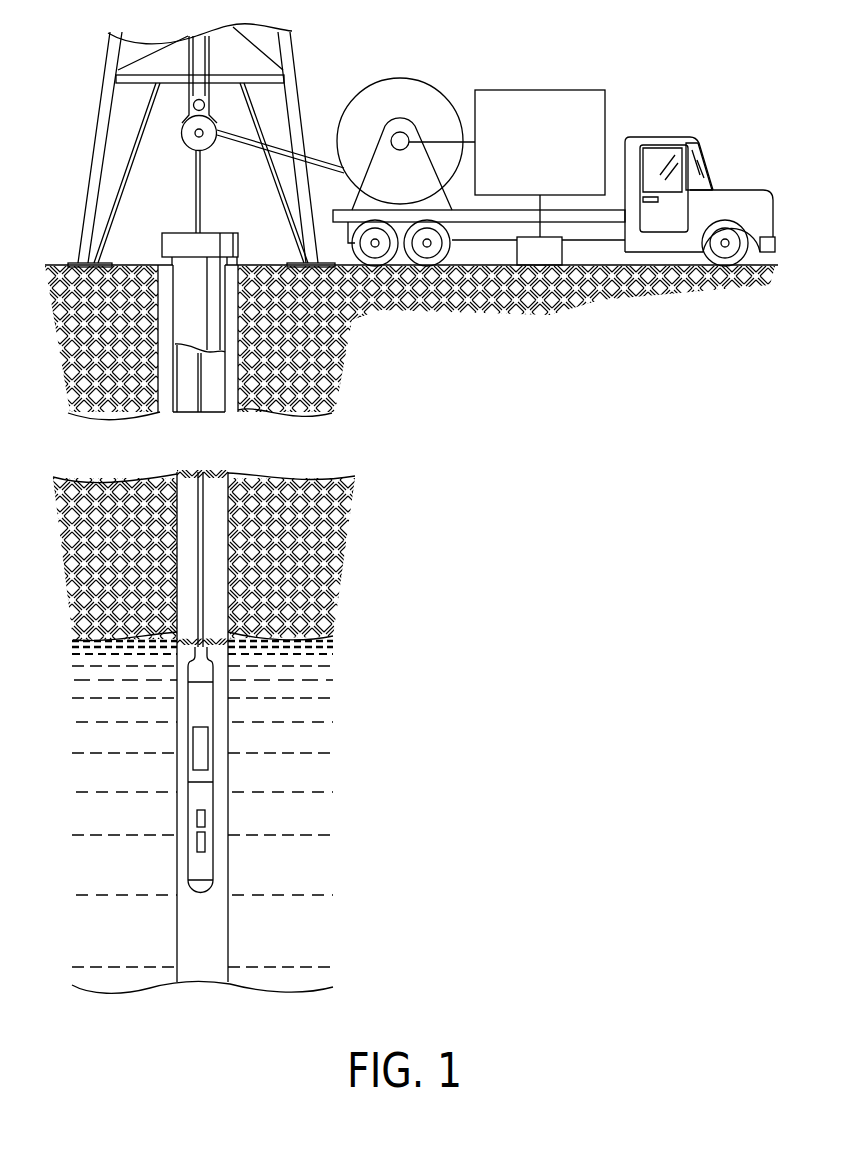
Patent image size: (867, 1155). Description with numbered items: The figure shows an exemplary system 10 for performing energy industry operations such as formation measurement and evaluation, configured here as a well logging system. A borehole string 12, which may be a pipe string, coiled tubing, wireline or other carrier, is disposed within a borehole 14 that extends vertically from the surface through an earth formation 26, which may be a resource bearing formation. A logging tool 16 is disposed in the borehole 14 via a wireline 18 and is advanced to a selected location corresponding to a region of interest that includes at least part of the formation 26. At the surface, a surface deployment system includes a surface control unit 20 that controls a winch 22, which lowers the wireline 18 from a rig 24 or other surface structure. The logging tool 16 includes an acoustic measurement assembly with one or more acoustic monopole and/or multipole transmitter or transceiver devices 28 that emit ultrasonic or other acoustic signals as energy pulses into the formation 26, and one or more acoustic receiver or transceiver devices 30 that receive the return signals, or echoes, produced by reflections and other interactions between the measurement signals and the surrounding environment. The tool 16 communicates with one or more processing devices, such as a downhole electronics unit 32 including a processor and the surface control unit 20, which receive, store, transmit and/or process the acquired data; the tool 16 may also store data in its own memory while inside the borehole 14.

The system 10 is at (494, 47).
The borehole string 12 is at (217, 660).
The borehole 14 is at (228, 542).
The logging tool 16 is at (225, 762).
The wireline 18 is at (200, 378).
The surface control unit 20 is at (540, 90).
The winch 22 is at (400, 78).
The rig 24 is at (123, 188).
The earth formation 26 is at (298, 893).
The acoustic transmitter or transceiver device 28 is at (197, 818).
The acoustic receiver or transceiver device 30 is at (197, 842).
The downhole electronics unit 32 is at (197, 755).